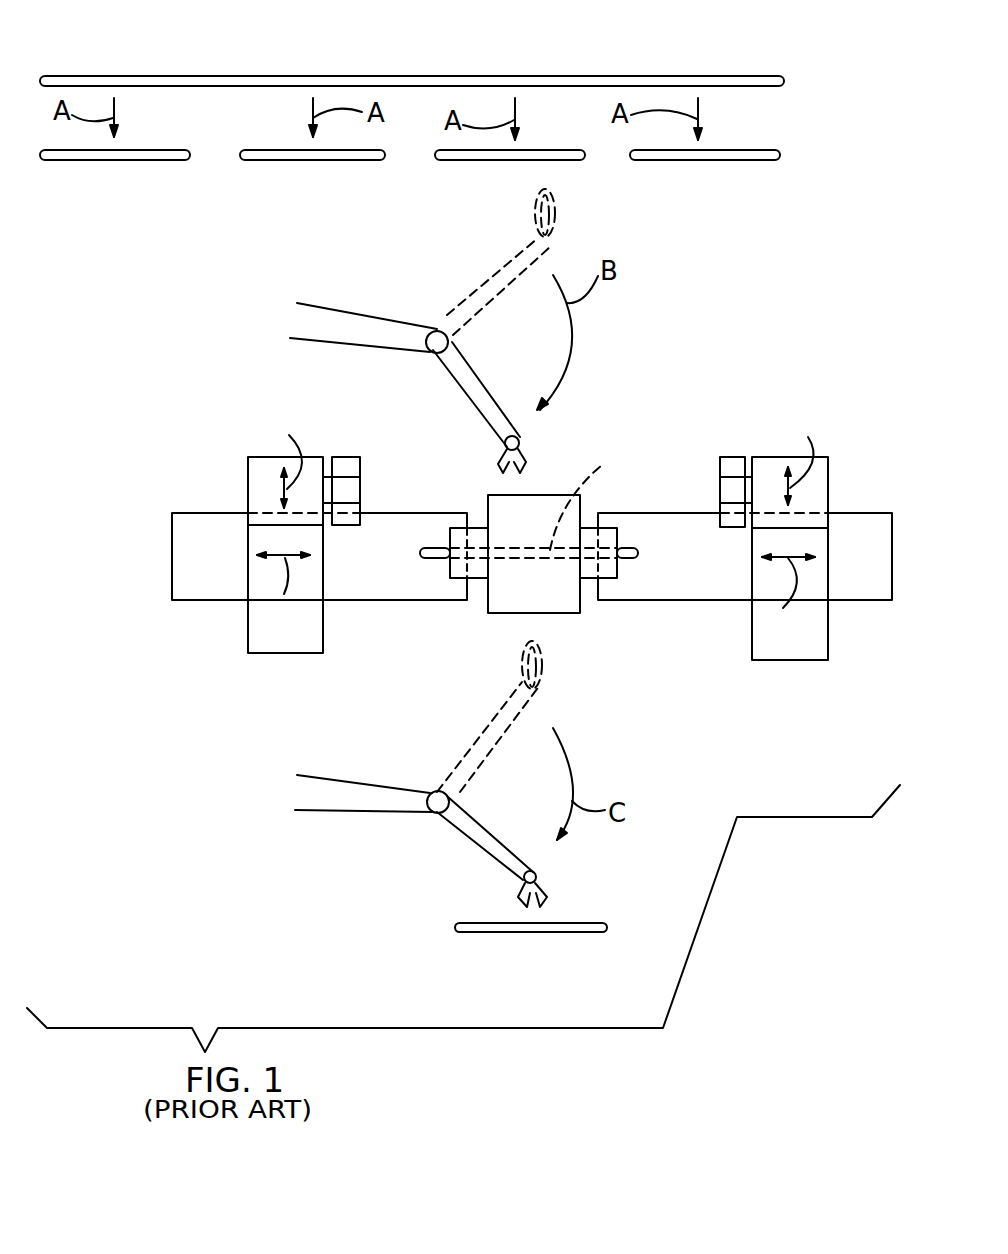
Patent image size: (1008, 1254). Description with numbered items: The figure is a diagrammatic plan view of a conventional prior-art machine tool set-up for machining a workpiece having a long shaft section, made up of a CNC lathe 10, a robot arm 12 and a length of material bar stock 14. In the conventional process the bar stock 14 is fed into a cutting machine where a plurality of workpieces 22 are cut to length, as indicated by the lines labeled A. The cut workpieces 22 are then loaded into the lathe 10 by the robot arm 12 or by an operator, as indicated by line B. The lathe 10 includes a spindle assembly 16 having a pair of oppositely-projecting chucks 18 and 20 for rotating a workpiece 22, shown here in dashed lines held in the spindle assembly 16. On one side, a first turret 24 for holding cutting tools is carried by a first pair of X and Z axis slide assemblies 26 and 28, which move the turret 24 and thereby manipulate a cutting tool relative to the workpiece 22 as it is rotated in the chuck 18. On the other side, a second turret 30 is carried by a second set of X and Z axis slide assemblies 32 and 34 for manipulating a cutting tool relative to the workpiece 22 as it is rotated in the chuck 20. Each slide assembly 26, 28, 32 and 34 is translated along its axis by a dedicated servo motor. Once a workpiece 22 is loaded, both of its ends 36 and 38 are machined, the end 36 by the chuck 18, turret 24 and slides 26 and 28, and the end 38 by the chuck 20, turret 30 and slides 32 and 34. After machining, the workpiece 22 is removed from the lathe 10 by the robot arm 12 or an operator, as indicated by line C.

The CNC lathe 10 is at (647, 343).
The robot arm 12 is at (345, 318).
The material bar stock 14 is at (195, 77).
The spindle assembly 16 is at (547, 493).
The chuck 18 is at (458, 573).
The chuck 20 is at (607, 578).
The workpiece 22 is at (135, 160).
The first turret 24 is at (345, 457).
The X axis slide assembly 26 is at (247, 478).
The Z axis slide assembly 28 is at (247, 635).
The second turret 30 is at (730, 460).
The X axis slide assembly 32 is at (830, 477).
The Z axis slide assembly 34 is at (829, 635).
The end of the workpiece 36 is at (428, 547).
The end of the workpiece 38 is at (627, 548).